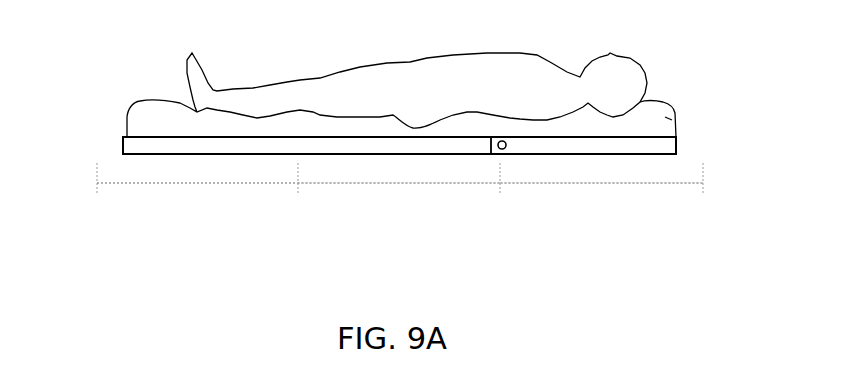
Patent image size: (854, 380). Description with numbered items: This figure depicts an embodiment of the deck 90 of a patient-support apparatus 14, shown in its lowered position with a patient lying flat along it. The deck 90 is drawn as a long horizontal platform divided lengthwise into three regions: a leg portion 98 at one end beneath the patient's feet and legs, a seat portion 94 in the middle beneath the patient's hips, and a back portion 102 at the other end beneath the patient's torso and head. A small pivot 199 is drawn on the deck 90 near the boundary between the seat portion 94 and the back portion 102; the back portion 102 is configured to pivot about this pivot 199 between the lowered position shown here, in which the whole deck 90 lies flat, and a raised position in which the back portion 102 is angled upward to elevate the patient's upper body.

The patient-support apparatus 14 is at (668, 146).
The deck 90 is at (127, 148).
The pivot 199 is at (504, 149).
The leg portion 98 is at (197, 199).
The seat portion 94 is at (399, 199).
The back portion 102 is at (601, 201).